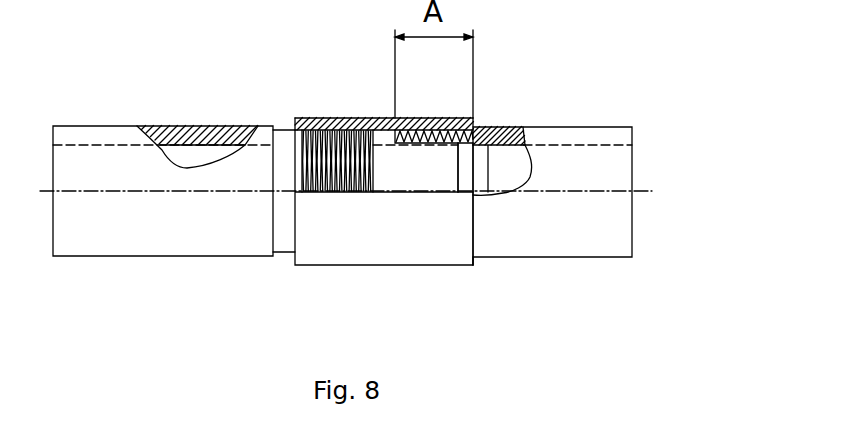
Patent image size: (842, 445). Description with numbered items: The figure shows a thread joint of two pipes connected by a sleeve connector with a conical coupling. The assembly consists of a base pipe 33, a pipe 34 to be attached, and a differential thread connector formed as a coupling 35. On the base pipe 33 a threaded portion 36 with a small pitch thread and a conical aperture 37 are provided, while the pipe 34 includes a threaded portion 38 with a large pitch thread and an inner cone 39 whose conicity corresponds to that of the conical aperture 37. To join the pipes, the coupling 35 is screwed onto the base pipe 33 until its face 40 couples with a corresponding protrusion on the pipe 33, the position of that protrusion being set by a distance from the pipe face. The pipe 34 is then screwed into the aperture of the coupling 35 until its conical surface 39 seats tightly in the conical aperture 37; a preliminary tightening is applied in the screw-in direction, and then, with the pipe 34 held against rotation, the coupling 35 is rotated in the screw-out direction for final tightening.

The base pipe 33 is at (548, 160).
The pipe to be attached 34 is at (182, 207).
The coupling 35 is at (345, 242).
The threaded portion 36 is at (414, 128).
The conical aperture 37 is at (471, 143).
The threaded portion 38 is at (336, 127).
The inner cone 39 is at (413, 169).
The face 40 is at (474, 262).